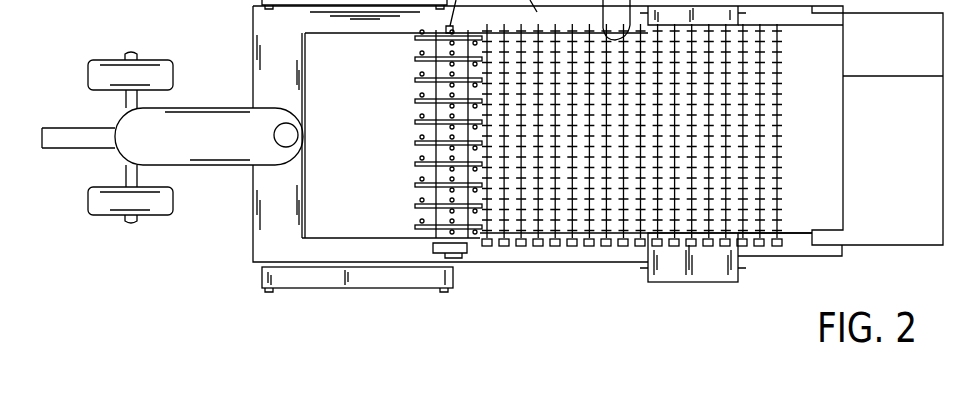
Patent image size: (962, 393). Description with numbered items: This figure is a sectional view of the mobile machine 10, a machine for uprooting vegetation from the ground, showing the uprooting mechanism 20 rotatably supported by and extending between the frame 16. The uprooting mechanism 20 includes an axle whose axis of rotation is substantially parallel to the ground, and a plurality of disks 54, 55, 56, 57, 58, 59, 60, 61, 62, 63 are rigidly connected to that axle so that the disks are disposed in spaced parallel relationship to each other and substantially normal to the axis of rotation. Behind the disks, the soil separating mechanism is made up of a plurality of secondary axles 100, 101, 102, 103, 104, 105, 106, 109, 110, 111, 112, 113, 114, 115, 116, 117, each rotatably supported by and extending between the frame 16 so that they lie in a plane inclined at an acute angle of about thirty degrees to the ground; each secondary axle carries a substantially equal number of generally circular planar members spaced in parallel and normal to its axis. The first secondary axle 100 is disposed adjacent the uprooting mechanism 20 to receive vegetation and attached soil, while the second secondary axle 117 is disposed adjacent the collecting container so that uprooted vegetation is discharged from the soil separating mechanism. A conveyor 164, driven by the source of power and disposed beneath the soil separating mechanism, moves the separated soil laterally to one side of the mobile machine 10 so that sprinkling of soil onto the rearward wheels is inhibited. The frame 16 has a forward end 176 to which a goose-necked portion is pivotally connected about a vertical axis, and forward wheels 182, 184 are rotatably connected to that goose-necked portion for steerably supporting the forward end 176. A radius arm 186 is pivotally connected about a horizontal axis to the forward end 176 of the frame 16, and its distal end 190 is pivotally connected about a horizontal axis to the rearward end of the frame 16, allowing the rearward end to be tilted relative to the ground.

The mobile machine 10 is at (126, 22).
The frame 16 is at (633, 253).
The uprooting mechanism 20 is at (418, 249).
The disk 54 is at (414, 35).
The disk 55 is at (414, 56).
The disk 56 is at (414, 77).
The disk 57 is at (414, 98).
The disk 58 is at (414, 119).
The disk 59 is at (414, 140).
The disk 60 is at (414, 161).
The disk 61 is at (414, 182).
The disk 62 is at (414, 203).
The disk 63 is at (414, 224).
The secondary axle 100 is at (488, 247).
The secondary axle 101 is at (505, 247).
The secondary axle 102 is at (522, 247).
The secondary axle 103 is at (538, 247).
The secondary axle 104 is at (554, 247).
The secondary axle 105 is at (588, 247).
The secondary axle 106 is at (602, 250).
The secondary axle 109 is at (643, 57).
The secondary axle 110 is at (660, 75).
The secondary axle 111 is at (680, 93).
The secondary axle 112 is at (695, 115).
The secondary axle 113 is at (723, 135).
The secondary axle 114 is at (730, 152).
The secondary axle 115 is at (747, 173).
The secondary axle 116 is at (762, 195).
The secondary axle 117 is at (777, 207).
The conveyor 164 is at (715, 283).
The forward end 176 is at (258, 42).
The forward wheel 182 is at (108, 215).
The forward wheel 184 is at (92, 78).
The radius arm 186 is at (293, 278).
The distal end 190 is at (430, 280).